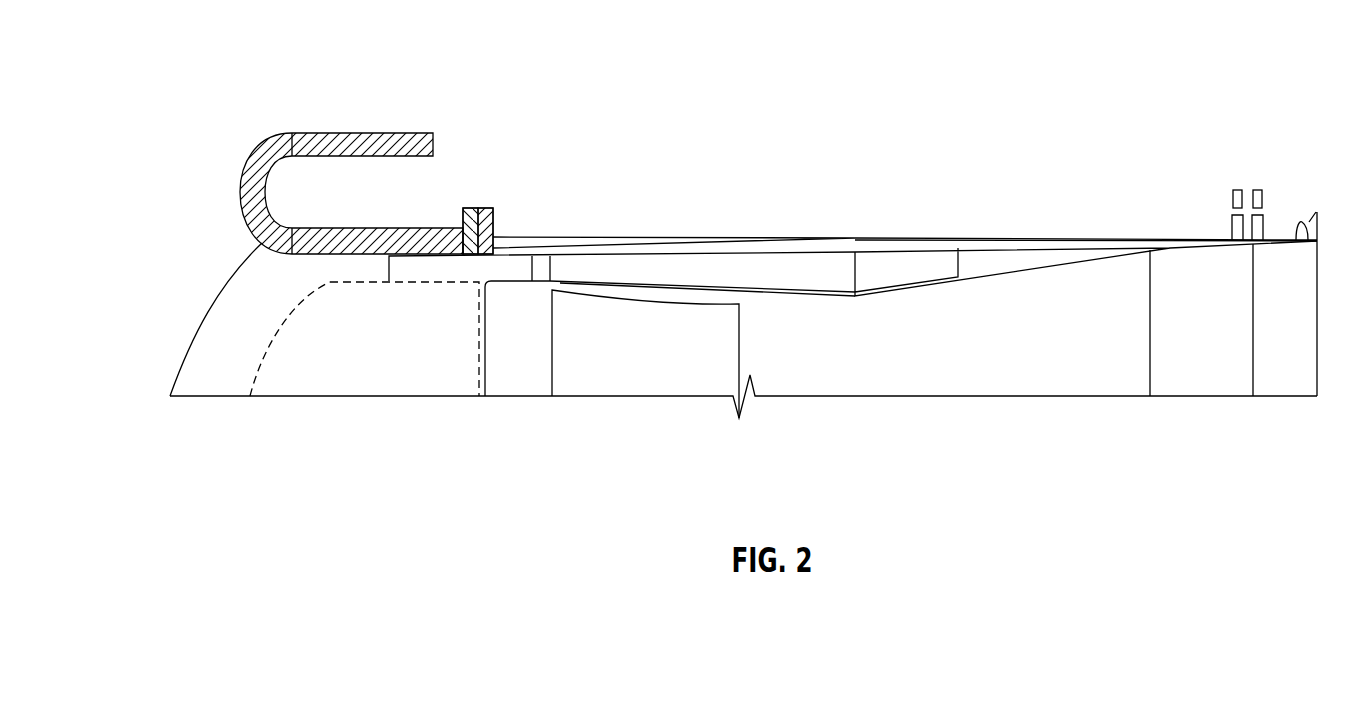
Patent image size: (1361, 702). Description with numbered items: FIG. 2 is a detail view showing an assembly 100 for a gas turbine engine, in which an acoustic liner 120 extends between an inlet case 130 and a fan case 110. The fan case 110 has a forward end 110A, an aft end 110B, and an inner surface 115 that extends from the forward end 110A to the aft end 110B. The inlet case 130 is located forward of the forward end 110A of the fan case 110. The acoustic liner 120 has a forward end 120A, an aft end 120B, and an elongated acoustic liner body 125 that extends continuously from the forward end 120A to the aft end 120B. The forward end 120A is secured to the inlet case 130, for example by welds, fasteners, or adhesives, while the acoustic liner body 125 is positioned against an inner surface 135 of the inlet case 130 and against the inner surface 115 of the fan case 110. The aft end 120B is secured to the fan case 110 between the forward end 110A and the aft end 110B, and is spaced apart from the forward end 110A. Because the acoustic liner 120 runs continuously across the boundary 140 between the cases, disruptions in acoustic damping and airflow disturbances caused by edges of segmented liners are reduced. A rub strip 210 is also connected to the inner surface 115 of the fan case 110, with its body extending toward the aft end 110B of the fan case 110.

The assembly 100 is at (124, 75).
The fan case 110 is at (1050, 257).
The forward end of the fan case 110A is at (515, 236).
The aft end of the fan case 110B is at (1308, 207).
The inner surface of the fan case 115 is at (990, 252).
The acoustic liner 120 is at (433, 268).
The forward end of the acoustic liner 120A is at (389, 272).
The aft end of the acoustic liner 120B is at (513, 258).
The acoustic liner body 125 is at (474, 268).
The inlet case 130 is at (222, 315).
The inner surface of the inlet case 135 is at (390, 263).
The boundary 140 is at (477, 203).
The rub strip 210 is at (765, 268).